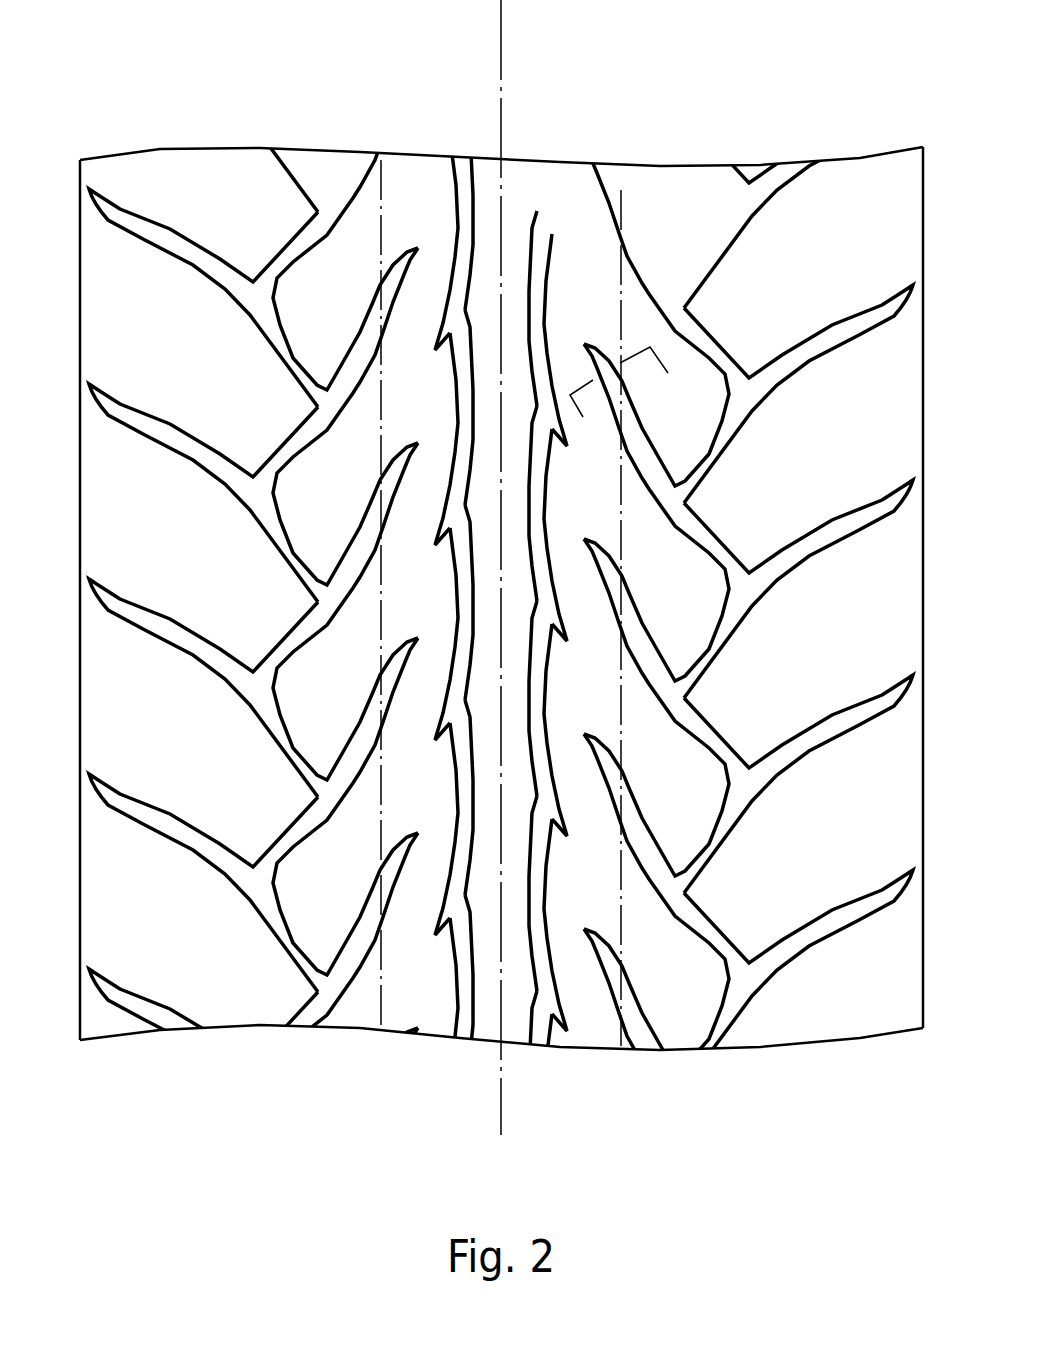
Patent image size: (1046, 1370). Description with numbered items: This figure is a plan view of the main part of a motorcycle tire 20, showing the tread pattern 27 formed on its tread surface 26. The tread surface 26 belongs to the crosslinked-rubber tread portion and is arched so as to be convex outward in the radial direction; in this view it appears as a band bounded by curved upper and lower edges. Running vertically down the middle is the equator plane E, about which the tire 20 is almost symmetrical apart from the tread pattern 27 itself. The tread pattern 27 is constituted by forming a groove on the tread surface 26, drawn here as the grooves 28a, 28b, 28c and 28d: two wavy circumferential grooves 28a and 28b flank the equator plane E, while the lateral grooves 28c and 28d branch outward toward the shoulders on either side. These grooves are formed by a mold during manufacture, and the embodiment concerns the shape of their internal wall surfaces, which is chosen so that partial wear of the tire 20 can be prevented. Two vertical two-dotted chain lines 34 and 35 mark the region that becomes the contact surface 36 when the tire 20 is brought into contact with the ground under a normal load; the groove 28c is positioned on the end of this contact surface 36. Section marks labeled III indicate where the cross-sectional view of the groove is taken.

The tire 20 is at (858, 158).
The tread surface 26 is at (847, 258).
The tread pattern 27 is at (191, 174).
The groove 28a is at (546, 697).
The groove 28b is at (457, 613).
The groove 28c is at (705, 522).
The groove 28d is at (167, 447).
The two-dotted chain line 34 is at (378, 214).
The two-dotted chain line 35 is at (623, 174).
The contact surface 36 is at (432, 998).
The equator plane E is at (502, 27).
The section line III- III is at (681, 401).